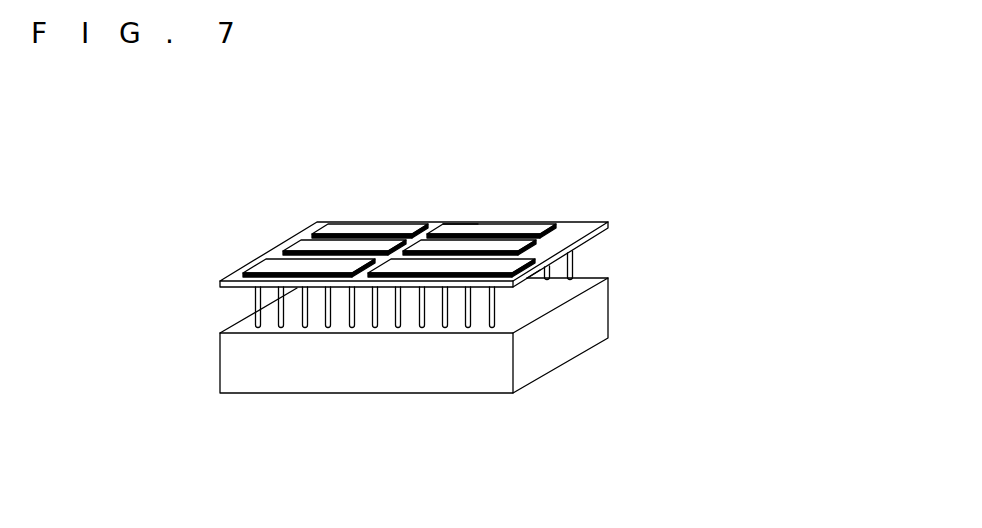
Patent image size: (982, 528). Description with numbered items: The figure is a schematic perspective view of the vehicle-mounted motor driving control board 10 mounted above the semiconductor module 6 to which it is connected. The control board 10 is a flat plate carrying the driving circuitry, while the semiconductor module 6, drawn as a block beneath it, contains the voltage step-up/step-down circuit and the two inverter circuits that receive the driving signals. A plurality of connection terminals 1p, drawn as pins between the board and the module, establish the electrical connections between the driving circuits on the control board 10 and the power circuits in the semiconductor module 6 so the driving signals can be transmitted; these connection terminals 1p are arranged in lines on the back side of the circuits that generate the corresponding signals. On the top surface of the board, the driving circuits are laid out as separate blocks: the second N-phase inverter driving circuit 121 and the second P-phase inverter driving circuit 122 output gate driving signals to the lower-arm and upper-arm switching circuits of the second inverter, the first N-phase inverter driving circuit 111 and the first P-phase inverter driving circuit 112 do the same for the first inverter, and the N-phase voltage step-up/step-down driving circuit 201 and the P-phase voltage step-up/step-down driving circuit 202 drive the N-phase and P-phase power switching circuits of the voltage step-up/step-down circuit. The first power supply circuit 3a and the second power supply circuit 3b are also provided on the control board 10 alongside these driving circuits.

The vehicle-mounted motor driving control board 10 is at (610, 223).
The semiconductor module 6 is at (220, 355).
The connection terminals 1p is at (573, 266).
The second N-phase inverter driving circuit 121 is at (243, 269).
The second P-phase inverter driving circuit 122 is at (364, 224).
The N-phase voltage step-up/step-down driving circuit 201 is at (362, 279).
The P-phase voltage step-up/step-down driving circuit 202 is at (455, 223).
The first N-phase inverter driving circuit 111 is at (533, 223).
The first P-phase inverter driving circuit 112 is at (535, 264).
The first power supply circuit 3a is at (533, 247).
The second power supply circuit 3b is at (290, 247).